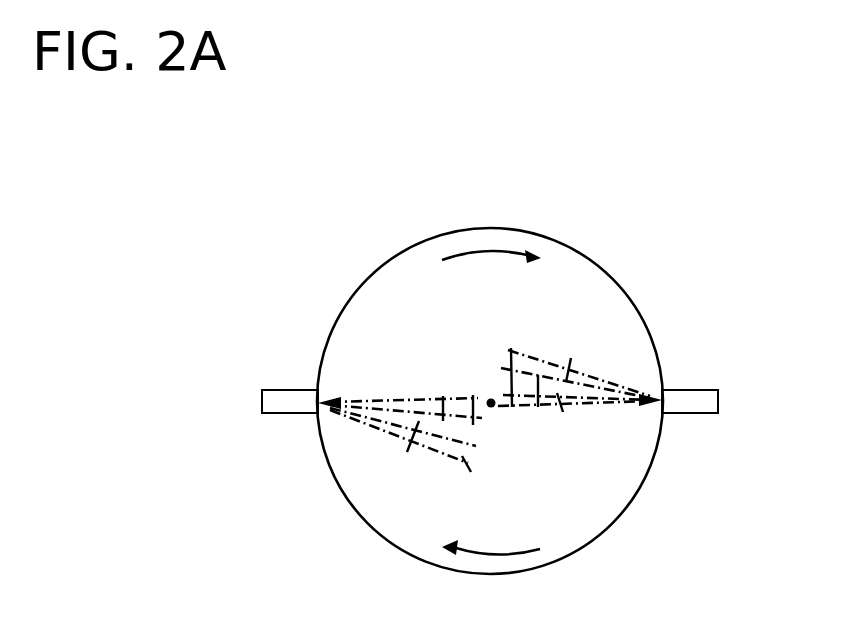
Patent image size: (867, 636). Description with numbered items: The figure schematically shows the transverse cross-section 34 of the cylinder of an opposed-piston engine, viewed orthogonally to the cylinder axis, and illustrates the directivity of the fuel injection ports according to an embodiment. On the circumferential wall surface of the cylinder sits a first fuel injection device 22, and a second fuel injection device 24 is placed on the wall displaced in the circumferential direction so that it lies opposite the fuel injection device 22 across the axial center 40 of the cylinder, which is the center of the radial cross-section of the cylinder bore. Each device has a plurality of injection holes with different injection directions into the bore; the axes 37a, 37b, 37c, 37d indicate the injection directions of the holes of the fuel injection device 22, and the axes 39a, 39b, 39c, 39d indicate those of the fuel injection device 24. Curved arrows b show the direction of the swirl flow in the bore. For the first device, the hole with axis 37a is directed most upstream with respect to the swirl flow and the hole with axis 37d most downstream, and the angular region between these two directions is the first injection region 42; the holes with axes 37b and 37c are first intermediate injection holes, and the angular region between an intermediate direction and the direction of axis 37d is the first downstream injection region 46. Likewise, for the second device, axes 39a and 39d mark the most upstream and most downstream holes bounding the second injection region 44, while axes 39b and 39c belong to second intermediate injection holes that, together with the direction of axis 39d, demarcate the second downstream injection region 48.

The fuel injection device 22 is at (290, 398).
The fuel injection device 24 is at (691, 398).
The transverse cross-section 34 is at (540, 233).
The axis 37a is at (418, 450).
The axis 37b is at (419, 430).
The axis 37c is at (420, 398).
The axis 37d is at (453, 397).
The axis 39a is at (602, 378).
The axis 39b is at (566, 378).
The axis 39c is at (563, 412).
The axis 39d is at (602, 390).
The axial center 40 is at (494, 408).
The first injection region 42 is at (473, 425).
The second injection region 44 is at (511, 348).
The first downstream injection region 46 is at (443, 421).
The second downstream injection region 48 is at (538, 375).
The arrow b is at (462, 250).